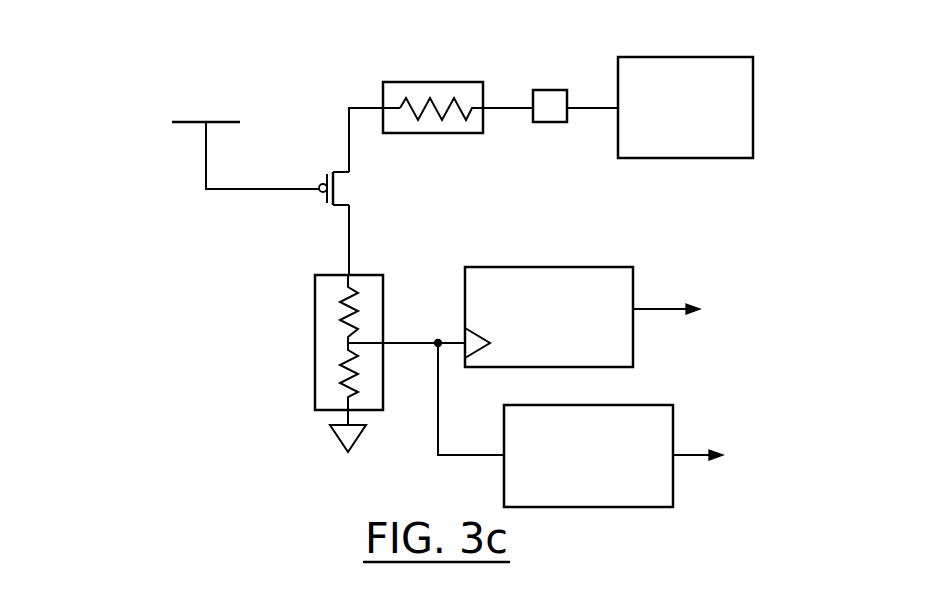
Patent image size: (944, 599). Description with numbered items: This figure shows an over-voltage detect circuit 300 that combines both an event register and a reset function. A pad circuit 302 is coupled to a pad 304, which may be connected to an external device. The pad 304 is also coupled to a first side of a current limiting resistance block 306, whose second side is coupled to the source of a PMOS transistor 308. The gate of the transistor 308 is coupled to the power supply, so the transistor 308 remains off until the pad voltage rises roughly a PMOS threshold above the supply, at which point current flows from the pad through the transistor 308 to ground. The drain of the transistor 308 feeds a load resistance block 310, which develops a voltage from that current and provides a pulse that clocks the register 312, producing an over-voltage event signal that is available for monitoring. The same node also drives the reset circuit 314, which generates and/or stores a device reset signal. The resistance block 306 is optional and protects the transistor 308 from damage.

The circuit 300 is at (84, 25).
The pad circuit 302 is at (688, 56).
The pad 304 is at (553, 123).
The resistance block 306 is at (473, 133).
The transistor 308 is at (353, 190).
The resistance block 310 is at (383, 353).
The register 312 is at (532, 267).
The reset circuit 314 is at (607, 406).